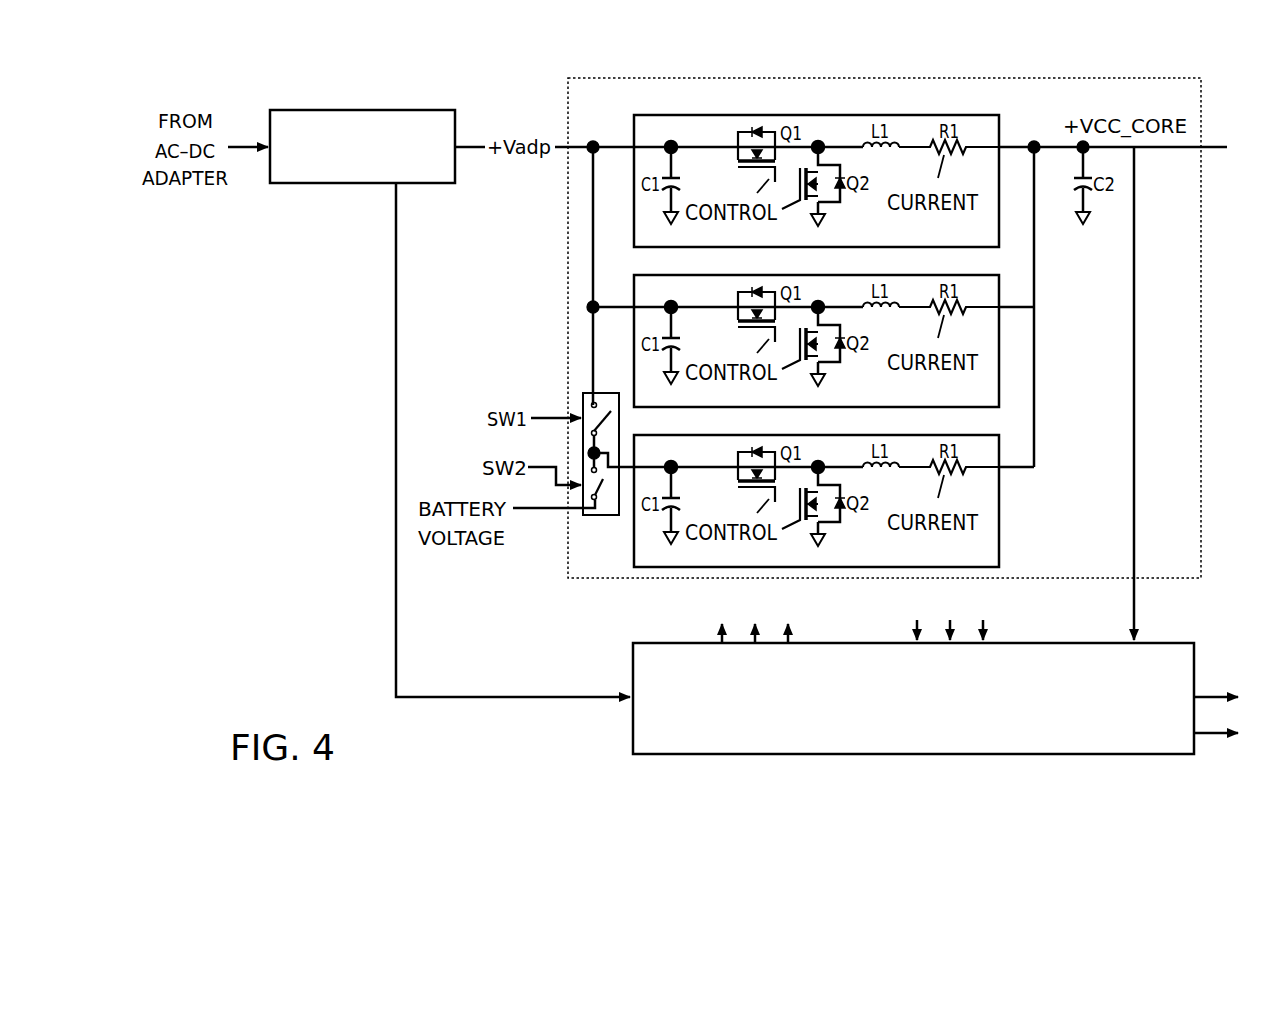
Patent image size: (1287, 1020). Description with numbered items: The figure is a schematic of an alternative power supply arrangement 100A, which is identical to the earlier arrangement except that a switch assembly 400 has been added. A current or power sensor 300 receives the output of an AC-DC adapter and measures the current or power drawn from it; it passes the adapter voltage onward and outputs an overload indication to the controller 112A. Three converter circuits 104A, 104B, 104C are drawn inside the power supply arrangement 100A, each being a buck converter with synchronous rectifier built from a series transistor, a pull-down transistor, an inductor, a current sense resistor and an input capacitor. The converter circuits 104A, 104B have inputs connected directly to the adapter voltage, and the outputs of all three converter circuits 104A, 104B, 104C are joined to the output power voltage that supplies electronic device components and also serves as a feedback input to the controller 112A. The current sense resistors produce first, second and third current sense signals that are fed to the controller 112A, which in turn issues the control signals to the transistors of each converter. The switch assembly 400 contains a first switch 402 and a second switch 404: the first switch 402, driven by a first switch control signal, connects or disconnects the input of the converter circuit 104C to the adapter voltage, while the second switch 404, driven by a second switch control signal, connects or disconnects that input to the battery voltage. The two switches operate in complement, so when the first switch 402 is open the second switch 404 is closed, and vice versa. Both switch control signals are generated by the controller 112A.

The current or power sensor 300 is at (400, 110).
The power supply arrangement 100A is at (903, 78).
The converter circuit 104A is at (999, 183).
The converter circuit 104B is at (999, 344).
The converter circuit 104C is at (999, 502).
The switch assembly 400 is at (596, 466).
The first switch 402 is at (613, 430).
The second switch 404 is at (603, 500).
The controller 112A is at (923, 755).